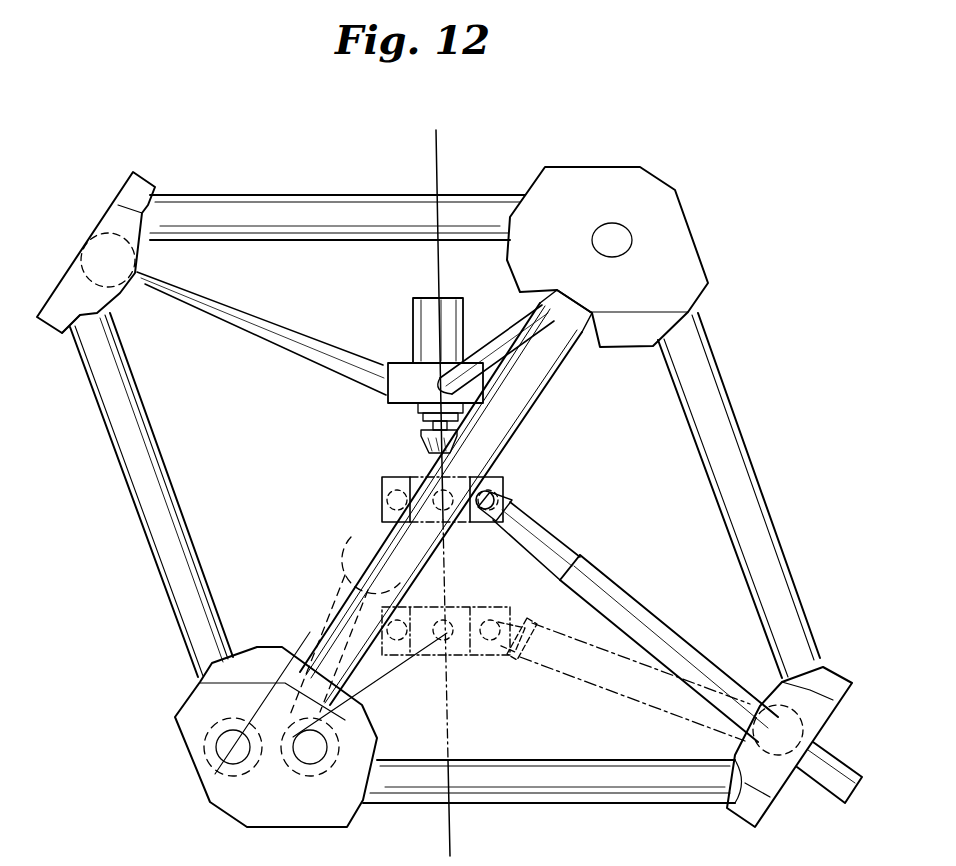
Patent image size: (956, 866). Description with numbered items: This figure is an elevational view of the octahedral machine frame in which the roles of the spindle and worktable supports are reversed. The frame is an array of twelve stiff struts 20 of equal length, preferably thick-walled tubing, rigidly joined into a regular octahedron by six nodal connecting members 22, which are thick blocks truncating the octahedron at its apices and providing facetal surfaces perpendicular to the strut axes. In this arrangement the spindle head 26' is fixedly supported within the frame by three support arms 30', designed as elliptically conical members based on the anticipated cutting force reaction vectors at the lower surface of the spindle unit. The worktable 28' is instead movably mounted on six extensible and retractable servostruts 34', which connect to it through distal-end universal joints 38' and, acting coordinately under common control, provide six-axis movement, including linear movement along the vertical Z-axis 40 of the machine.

The struts 20 is at (362, 205).
The nodal connecting members 22 is at (108, 210).
The Z-axis 40 is at (437, 158).
The support arms 30' is at (345, 327).
The spindle head 26' is at (435, 375).
The worktable 28' is at (411, 555).
The distal-end universal joint 38' is at (531, 494).
The servostruts 34' is at (534, 622).